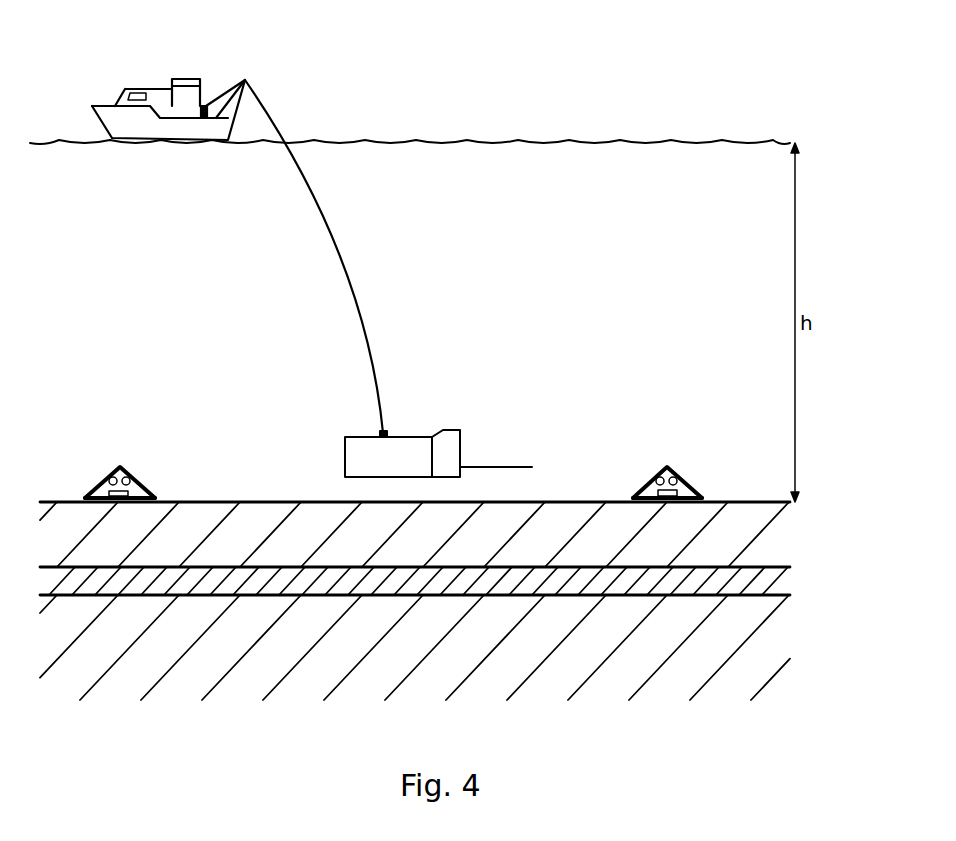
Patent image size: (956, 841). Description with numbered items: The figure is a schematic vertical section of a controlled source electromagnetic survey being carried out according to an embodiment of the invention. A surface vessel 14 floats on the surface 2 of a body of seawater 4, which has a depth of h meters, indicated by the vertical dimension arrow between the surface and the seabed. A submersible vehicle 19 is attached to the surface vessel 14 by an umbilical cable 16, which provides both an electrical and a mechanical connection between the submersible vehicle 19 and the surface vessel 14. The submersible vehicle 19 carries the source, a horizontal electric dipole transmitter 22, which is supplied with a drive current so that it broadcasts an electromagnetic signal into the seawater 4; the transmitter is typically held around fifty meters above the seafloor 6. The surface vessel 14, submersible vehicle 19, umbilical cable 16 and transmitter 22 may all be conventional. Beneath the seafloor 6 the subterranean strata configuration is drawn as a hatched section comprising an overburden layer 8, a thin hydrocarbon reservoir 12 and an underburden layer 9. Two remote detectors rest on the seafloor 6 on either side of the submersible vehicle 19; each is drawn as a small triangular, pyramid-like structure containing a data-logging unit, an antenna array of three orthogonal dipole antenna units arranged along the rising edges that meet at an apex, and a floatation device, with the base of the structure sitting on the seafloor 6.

The surface 2 is at (387, 142).
The seawater 4 is at (193, 323).
The seafloor 6 is at (258, 502).
The overburden layer 8 is at (740, 542).
The underburden layer 9 is at (747, 623).
The hydrocarbon reservoir 12 is at (772, 578).
The surface vessel 14 is at (190, 78).
The umbilical cable 16 is at (356, 296).
The submersible vehicle 19 is at (408, 436).
The HED transmitter 22 is at (520, 468).